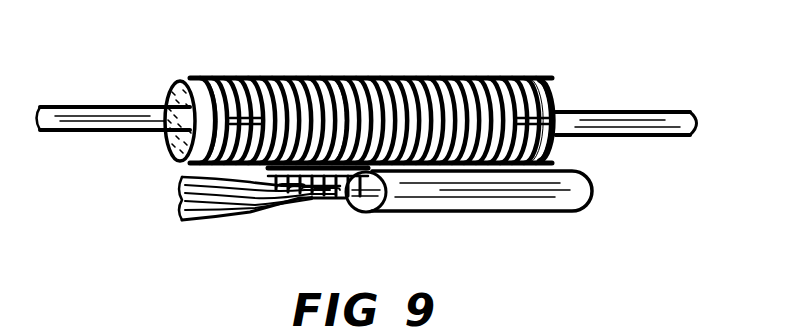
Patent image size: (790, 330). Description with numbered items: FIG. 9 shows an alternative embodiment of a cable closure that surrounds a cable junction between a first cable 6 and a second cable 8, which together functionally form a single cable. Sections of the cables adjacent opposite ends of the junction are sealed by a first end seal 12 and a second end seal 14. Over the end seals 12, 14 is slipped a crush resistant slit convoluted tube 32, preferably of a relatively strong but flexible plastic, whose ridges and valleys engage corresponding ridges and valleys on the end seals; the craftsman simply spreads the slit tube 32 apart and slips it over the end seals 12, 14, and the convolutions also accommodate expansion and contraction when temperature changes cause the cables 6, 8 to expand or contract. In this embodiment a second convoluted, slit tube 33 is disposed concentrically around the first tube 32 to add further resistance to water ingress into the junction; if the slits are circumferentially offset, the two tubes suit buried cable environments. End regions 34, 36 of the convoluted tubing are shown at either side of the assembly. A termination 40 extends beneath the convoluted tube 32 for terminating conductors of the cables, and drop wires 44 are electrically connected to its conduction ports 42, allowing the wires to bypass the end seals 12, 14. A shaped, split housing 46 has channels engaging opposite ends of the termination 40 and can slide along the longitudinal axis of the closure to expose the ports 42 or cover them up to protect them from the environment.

The first cable 6 is at (100, 133).
The second cable 8 is at (648, 135).
The first end seal 12 is at (172, 88).
The second end seal 14 is at (558, 108).
The convoluted tube 32 is at (405, 77).
The second convoluted slit tube 33 is at (336, 77).
The left end ring 34 is at (219, 77).
The right end ring 36 is at (522, 77).
The termination 40 is at (315, 196).
The conduction ports 42 is at (385, 205).
The drop wires 44 is at (218, 216).
The split housing 46 is at (505, 195).